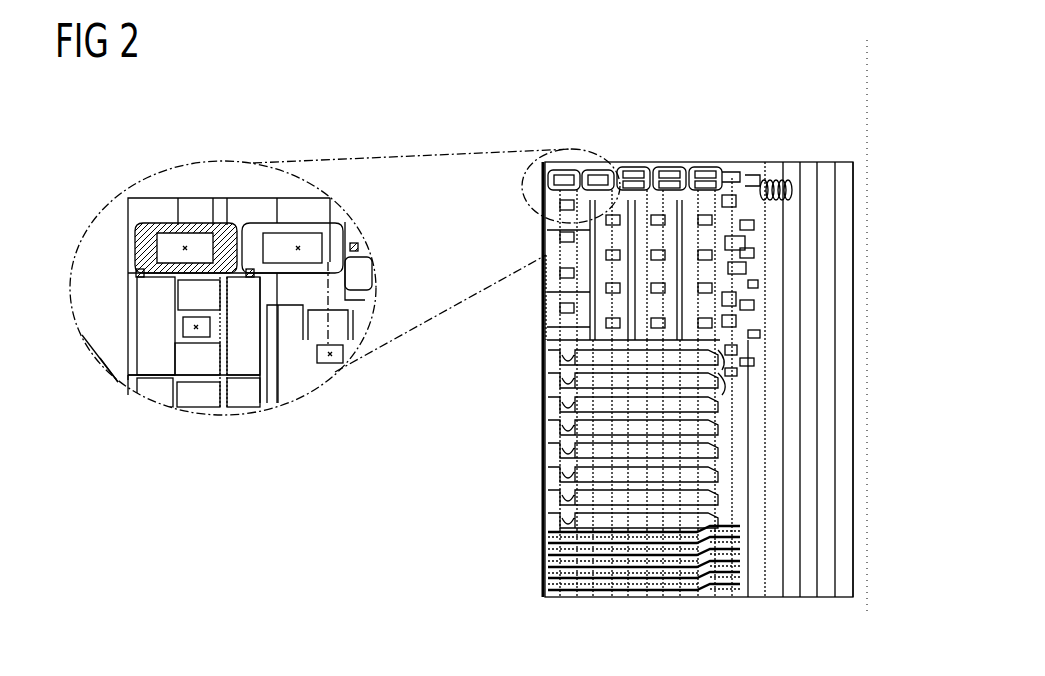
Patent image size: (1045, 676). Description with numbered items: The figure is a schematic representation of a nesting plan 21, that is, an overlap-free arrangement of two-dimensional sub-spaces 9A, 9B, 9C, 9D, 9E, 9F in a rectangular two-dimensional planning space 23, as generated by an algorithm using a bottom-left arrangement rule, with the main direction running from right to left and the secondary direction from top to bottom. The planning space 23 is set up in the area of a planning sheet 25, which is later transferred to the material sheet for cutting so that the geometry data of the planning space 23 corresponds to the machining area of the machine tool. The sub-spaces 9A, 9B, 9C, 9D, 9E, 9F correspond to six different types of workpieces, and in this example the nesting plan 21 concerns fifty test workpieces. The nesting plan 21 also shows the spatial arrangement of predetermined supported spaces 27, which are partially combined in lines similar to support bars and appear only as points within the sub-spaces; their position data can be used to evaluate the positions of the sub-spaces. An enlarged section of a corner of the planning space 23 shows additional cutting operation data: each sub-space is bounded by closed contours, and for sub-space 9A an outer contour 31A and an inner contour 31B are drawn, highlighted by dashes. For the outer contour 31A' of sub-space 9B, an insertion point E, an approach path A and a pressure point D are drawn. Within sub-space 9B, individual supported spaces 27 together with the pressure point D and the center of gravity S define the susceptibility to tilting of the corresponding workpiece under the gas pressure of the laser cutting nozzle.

The nesting plan 21 is at (866, 121).
The planning space 23 is at (297, 207).
The planning sheet 25 is at (253, 197).
The supported spaces 27 is at (228, 360).
The sub-space 9A is at (215, 232).
The sub-space 9B is at (143, 305).
The sub-space 9C is at (760, 180).
The sub-space 9D is at (783, 178).
The sub-space 9E is at (552, 340).
The sub-space 9F is at (552, 537).
The outer contour 31A is at (178, 208).
The outer contour 31A' is at (147, 405).
The inner contour 31B is at (140, 272).
The center of gravity S is at (195, 225).
The insertion point E is at (127, 341).
The approach path A is at (126, 361).
The pressure point D is at (128, 384).